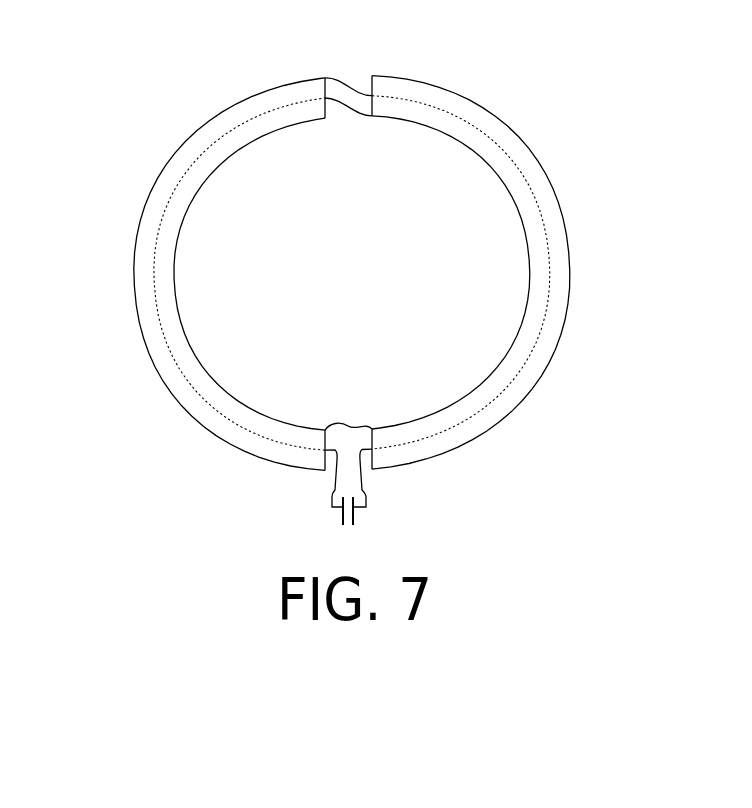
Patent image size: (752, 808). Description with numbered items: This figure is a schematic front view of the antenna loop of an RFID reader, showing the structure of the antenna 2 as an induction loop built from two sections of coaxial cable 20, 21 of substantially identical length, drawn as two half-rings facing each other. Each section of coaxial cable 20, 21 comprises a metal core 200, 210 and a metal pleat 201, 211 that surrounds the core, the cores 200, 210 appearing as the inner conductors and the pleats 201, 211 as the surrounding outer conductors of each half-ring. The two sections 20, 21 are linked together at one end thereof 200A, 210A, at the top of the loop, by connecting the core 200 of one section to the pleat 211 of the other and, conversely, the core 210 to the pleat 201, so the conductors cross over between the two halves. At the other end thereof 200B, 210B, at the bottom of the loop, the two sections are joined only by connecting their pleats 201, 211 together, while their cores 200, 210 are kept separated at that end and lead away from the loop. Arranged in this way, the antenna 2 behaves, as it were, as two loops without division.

The antenna 2 is at (352, 267).
The section of coaxial cable 20 is at (522, 259).
The section of coaxial cable 21 is at (178, 240).
The metal core 200 is at (463, 120).
The metal pleat 201 is at (490, 430).
The metal core 210 is at (153, 272).
The metal pleat 211 is at (169, 160).
The end of section of coaxial cable 200A is at (372, 76).
The other end of section of coaxial cable 200B is at (372, 429).
The end of section of coaxial cable 210A is at (325, 78).
The other end of section of coaxial cable 210B is at (325, 430).